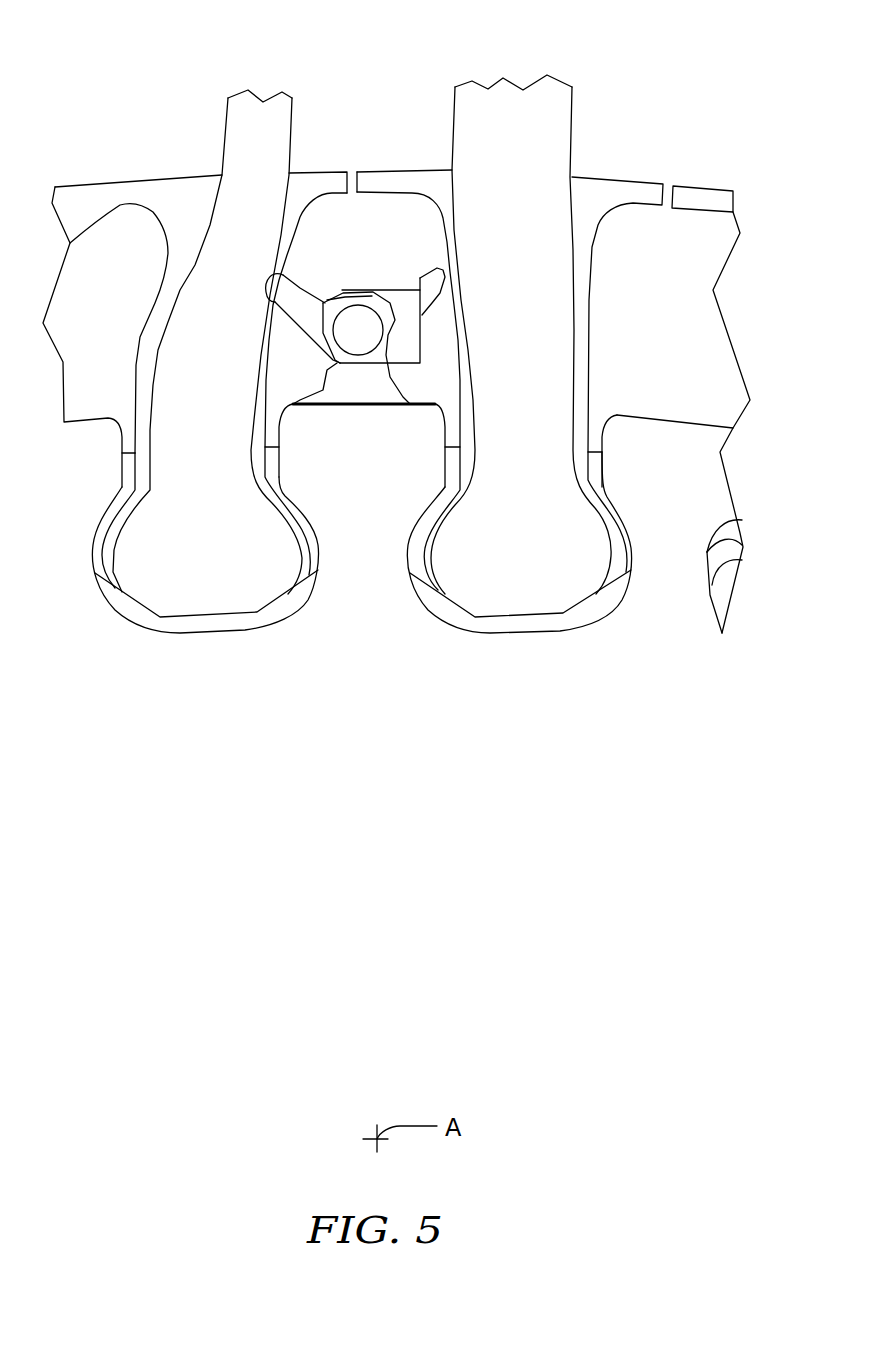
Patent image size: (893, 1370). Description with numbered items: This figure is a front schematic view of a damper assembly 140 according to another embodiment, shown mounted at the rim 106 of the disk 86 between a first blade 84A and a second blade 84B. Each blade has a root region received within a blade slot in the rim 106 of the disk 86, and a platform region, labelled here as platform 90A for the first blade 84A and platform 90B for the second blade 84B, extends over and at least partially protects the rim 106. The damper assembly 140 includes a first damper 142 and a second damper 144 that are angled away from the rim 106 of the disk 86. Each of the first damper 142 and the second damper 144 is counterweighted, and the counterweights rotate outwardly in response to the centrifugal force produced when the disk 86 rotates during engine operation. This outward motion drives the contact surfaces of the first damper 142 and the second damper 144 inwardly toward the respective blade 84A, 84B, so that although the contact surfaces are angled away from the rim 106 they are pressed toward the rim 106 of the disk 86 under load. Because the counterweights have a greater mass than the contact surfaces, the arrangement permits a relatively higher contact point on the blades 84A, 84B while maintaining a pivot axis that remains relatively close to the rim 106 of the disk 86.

The disk 86 is at (545, 733).
The first blade 84A is at (230, 339).
The second blade 84B is at (545, 144).
The first slot 90A is at (327, 178).
The second slot 90B is at (410, 177).
The damper assembly 140 is at (374, 254).
The first damper 142 is at (302, 290).
The second damper 144 is at (433, 302).
The rim 106 is at (423, 402).